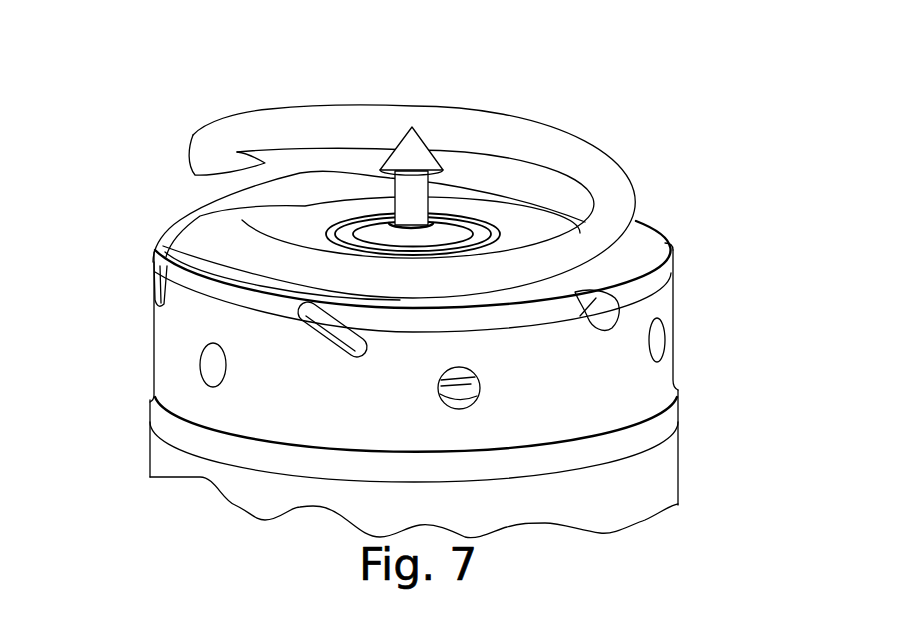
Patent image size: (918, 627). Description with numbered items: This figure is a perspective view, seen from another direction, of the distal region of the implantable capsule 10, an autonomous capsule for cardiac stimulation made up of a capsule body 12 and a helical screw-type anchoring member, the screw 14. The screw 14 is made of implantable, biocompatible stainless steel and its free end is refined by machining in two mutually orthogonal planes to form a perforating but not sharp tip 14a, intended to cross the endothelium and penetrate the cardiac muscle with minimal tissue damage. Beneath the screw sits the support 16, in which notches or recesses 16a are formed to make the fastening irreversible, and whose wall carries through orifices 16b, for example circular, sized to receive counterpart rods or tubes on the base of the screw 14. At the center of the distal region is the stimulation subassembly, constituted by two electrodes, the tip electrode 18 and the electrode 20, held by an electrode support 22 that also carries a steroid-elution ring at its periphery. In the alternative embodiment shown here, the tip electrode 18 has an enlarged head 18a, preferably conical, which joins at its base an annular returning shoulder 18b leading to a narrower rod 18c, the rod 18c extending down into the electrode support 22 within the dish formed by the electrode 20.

The implantable capsule 10 is at (429, 298).
The capsule body 12 is at (660, 477).
The helical screw 14 is at (371, 187).
The tip 14a is at (224, 148).
The support 16 is at (170, 333).
The notches or recesses 16a is at (150, 273).
The through orifices 16b is at (205, 367).
The tip electrode 18 is at (448, 123).
The enlarged head 18a is at (434, 152).
The annular returning shoulder 18b is at (380, 176).
The rod 18c is at (417, 196).
The electrode 20 is at (316, 220).
The electrode support 22 is at (477, 228).